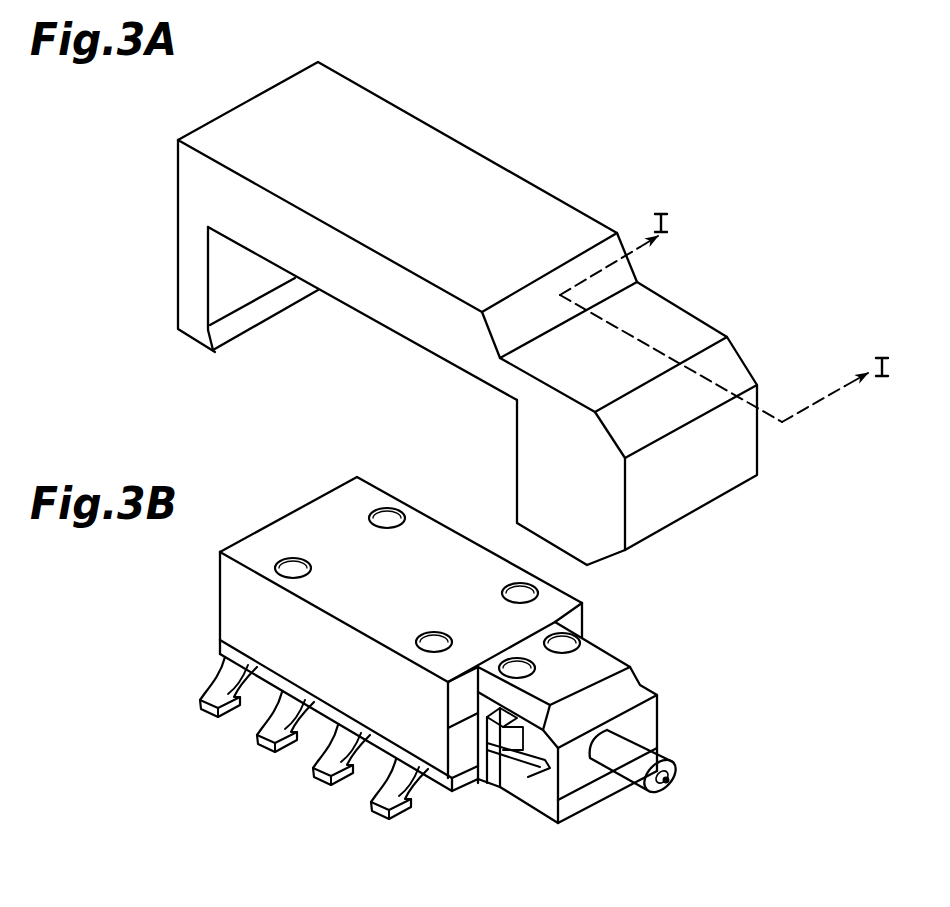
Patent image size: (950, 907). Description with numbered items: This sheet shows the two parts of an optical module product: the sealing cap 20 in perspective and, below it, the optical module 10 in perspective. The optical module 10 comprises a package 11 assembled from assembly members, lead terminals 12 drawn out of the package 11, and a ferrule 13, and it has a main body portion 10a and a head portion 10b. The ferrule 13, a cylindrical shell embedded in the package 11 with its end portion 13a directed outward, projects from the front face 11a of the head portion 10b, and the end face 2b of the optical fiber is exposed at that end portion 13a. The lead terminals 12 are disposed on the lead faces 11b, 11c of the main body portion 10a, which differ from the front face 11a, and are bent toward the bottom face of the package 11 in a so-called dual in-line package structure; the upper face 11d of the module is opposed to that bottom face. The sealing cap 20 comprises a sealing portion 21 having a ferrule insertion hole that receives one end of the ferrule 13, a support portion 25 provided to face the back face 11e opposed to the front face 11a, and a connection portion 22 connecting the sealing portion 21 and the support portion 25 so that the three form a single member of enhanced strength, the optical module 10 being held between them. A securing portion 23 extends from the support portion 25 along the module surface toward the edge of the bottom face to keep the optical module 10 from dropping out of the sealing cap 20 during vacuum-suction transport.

In FIG. 3A, the sealing cap 20 is at (507, 313).
In FIG. 3A, the connection portion 22 is at (432, 127).
In FIG. 3A, the support portion 25 is at (177, 272).
In FIG. 3A, the securing portion 23 is at (232, 326).
In FIG. 3A, the sealing portion 21 is at (701, 318).
In FIG. 3B, the optical module 10 is at (432, 660).
In FIG. 3B, the main body portion 10a is at (475, 522).
In FIG. 3B, the head portion 10b is at (555, 691).
In FIG. 3B, the package 11 is at (438, 537).
In FIG. 3B, the front face 11a is at (580, 785).
In FIG. 3B, the lead face 11b is at (405, 735).
In FIG. 3B, the lead face 11c is at (578, 590).
In FIG. 3B, the upper face 11d is at (320, 507).
In FIG. 3B, the back face 11e is at (220, 596).
In FIG. 3B, the lead terminals 12 is at (208, 697).
In FIG. 3B, the ferrule 13 is at (668, 797).
In FIG. 3B, the end portion 13a is at (650, 790).
In FIG. 3B, the end face 2b is at (672, 786).